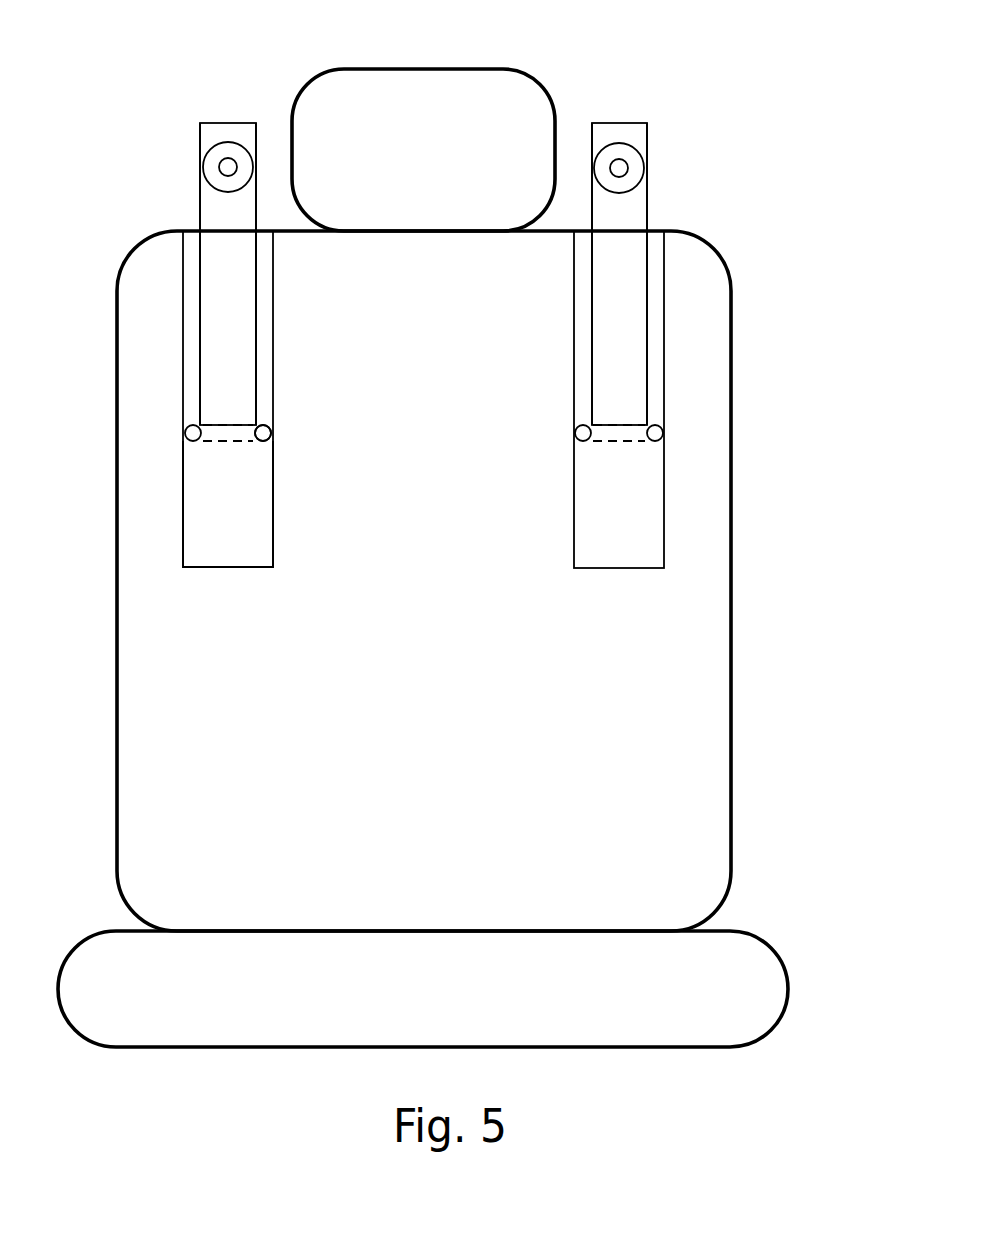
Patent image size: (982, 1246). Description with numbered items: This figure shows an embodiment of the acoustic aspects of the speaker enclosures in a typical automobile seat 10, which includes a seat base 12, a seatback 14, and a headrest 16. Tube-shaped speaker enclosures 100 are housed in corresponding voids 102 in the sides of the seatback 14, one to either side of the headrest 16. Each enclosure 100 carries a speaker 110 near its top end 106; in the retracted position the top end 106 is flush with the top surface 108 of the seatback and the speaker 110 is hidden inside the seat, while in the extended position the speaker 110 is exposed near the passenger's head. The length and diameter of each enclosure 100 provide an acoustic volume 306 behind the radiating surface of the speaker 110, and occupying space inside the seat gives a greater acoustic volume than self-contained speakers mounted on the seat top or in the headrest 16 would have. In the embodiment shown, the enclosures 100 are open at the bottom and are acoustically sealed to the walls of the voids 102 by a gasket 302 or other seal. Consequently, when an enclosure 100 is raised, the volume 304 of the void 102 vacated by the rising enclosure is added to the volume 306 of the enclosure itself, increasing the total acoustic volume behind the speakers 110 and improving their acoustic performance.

The automobile seat 10 is at (786, 244).
The seat base 12 is at (765, 940).
The seatback 14 is at (731, 636).
The headrest 16 is at (533, 76).
The tube-shaped speaker enclosure 100 is at (200, 380).
The void 102 is at (183, 413).
The top end 106 is at (215, 123).
The top surface 108 is at (171, 231).
The speaker 110 is at (232, 142).
The gasket 302 is at (272, 430).
The volume of the void 304 is at (248, 522).
The volume of the enclosure 306 is at (248, 357).